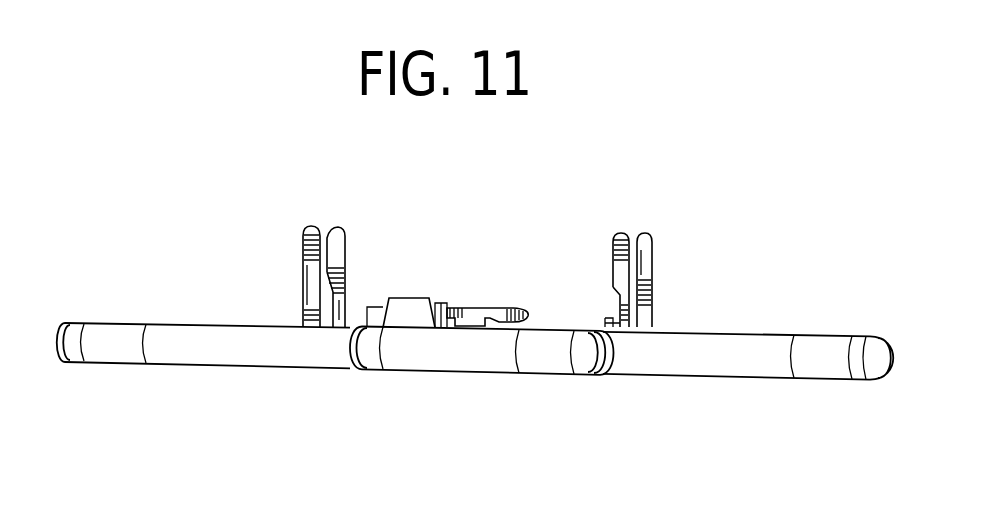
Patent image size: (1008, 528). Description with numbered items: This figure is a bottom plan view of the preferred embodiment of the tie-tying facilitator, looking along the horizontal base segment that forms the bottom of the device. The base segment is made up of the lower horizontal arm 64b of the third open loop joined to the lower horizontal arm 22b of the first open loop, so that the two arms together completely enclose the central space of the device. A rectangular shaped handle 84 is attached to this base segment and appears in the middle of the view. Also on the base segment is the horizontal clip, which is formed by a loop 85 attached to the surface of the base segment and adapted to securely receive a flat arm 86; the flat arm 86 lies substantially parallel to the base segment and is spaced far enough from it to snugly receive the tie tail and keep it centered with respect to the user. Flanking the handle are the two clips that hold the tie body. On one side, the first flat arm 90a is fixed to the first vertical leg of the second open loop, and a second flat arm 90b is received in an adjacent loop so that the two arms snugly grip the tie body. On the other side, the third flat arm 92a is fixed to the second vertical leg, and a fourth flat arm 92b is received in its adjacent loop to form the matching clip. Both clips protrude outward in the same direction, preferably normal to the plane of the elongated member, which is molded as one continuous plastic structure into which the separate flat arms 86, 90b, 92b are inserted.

The lower horizontal arm of the third open loop 64b is at (127, 348).
The handle 84 is at (463, 358).
The lower horizontal arm of the first open loop 22b is at (825, 372).
The third flat arm 92a is at (303, 258).
The fourth flat arm 92b is at (340, 246).
The loop 85 is at (414, 308).
The flat arm 86 is at (493, 313).
The second flat arm 90b is at (615, 256).
The first flat arm 90a is at (652, 255).